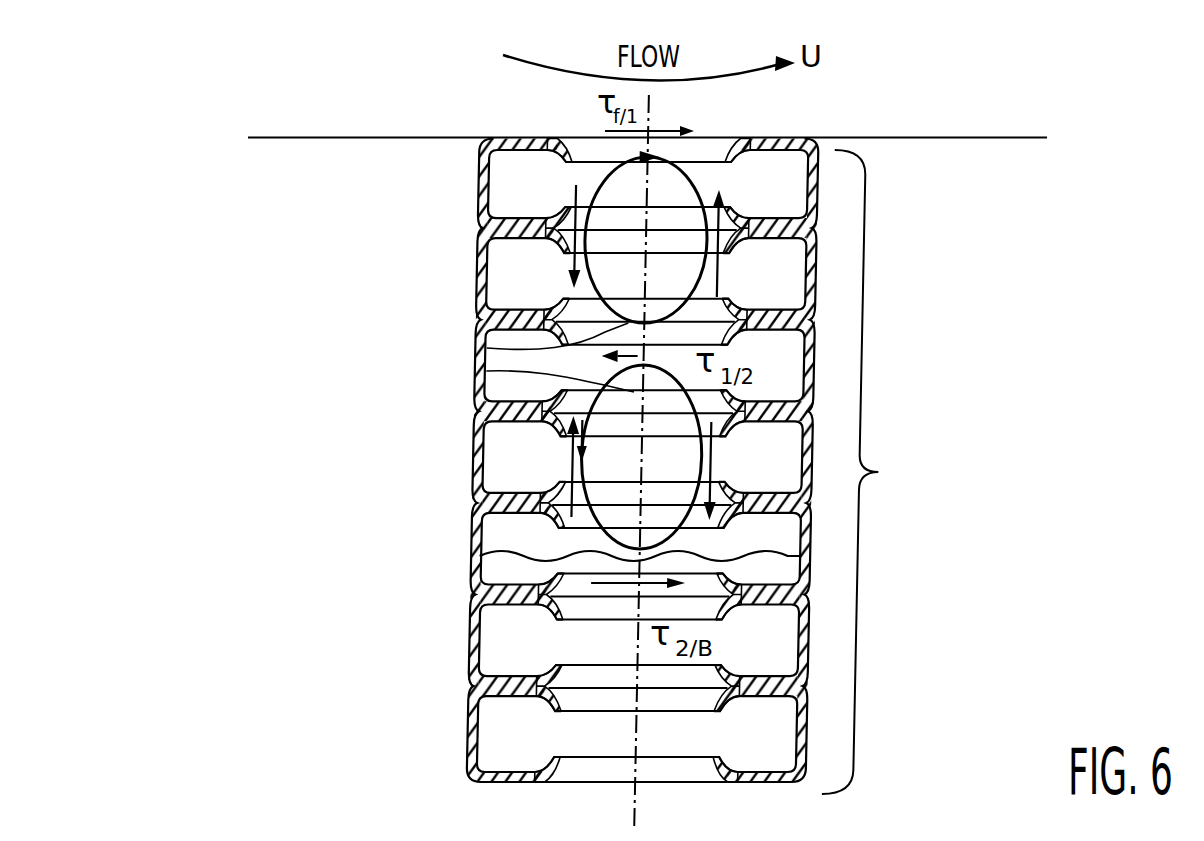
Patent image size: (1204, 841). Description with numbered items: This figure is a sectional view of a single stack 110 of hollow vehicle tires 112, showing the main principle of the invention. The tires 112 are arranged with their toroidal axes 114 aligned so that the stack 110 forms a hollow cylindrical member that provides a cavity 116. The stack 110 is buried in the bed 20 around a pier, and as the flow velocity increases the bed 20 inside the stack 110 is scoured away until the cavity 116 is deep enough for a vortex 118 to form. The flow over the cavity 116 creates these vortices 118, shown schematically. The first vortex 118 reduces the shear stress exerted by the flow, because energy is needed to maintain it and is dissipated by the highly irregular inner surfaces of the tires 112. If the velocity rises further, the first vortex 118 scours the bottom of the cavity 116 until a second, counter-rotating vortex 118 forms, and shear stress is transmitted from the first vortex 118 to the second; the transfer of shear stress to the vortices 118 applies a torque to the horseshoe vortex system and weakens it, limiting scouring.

The bed 20 is at (400, 136).
The stack 110 is at (549, 461).
The tire 112 is at (475, 277).
The toroidal axis 114 is at (652, 113).
The cavity 116 is at (722, 147).
The vortex 118 is at (481, 372).